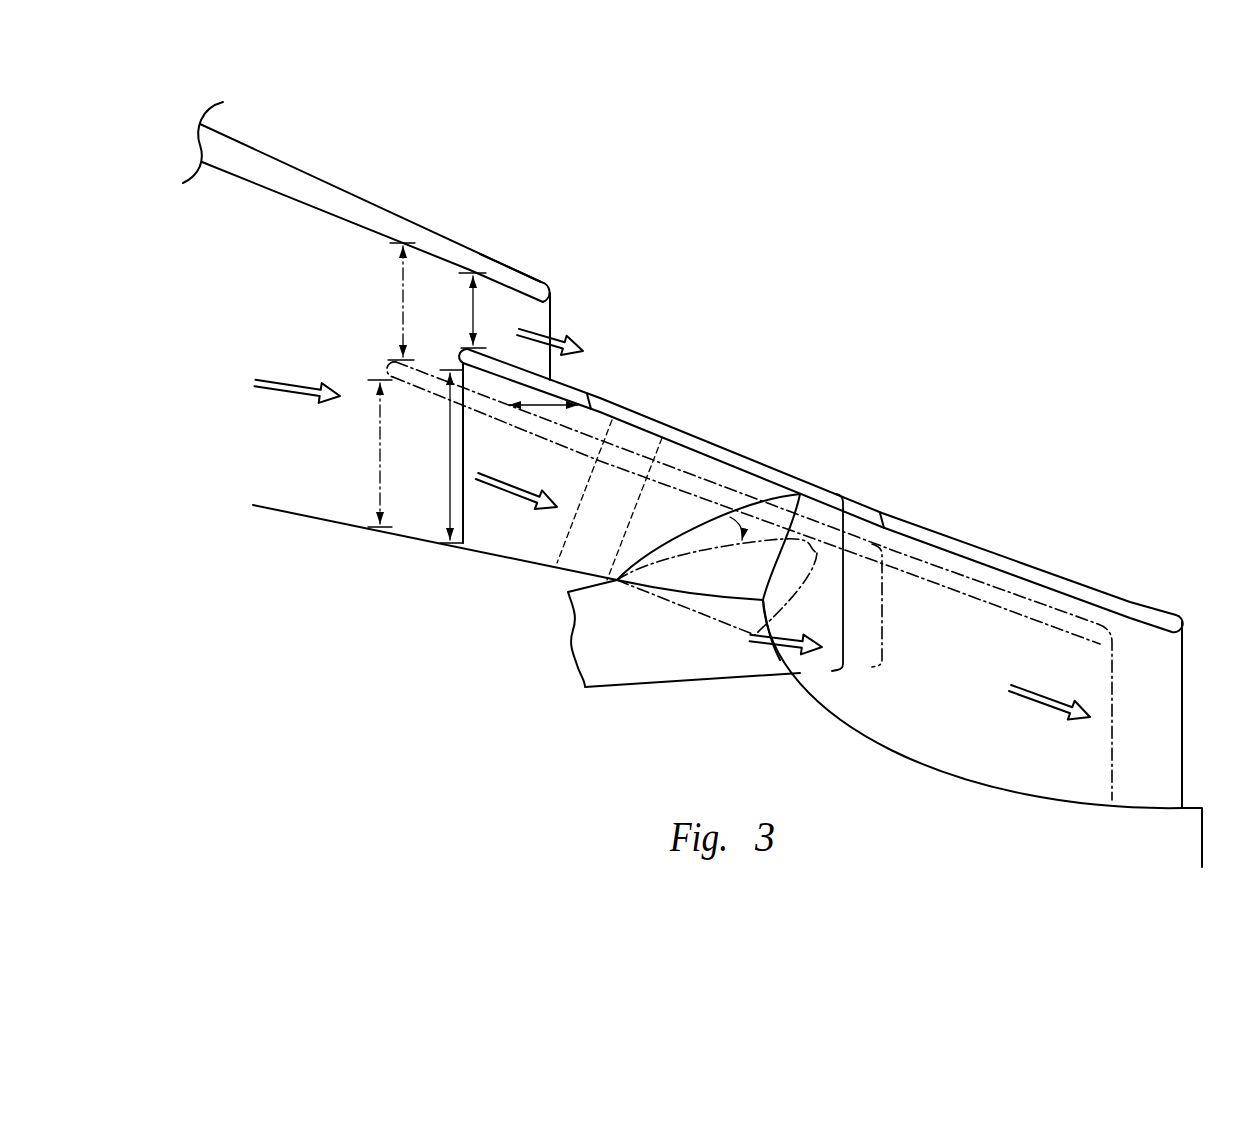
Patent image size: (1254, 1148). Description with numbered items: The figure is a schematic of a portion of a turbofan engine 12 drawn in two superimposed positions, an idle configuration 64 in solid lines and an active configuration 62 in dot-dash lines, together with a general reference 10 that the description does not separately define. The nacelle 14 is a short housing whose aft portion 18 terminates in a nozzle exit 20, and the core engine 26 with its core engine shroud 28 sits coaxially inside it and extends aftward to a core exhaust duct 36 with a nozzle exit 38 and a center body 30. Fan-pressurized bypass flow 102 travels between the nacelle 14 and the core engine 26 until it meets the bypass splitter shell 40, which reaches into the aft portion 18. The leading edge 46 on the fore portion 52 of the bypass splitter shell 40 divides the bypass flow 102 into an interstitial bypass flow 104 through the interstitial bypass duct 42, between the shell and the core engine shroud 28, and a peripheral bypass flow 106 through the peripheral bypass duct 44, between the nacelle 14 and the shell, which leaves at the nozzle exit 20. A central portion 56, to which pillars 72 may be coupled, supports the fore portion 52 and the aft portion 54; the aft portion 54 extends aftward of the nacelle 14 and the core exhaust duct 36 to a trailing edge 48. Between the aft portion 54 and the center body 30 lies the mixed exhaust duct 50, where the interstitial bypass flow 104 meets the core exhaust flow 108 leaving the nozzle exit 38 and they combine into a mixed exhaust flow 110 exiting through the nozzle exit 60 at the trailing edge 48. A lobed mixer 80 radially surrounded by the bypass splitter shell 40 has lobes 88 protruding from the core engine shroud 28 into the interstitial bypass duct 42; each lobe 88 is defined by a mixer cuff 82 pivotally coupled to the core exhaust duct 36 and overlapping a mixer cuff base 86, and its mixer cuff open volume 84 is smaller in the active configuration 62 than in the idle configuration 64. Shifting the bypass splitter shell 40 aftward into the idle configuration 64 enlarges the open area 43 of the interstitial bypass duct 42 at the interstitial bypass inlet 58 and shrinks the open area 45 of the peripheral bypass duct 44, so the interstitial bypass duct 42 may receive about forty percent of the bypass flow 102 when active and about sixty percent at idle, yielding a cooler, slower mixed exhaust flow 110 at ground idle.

The aircraft 10 is at (915, 182).
The turbofan engine 12 is at (900, 228).
The nacelle 14 is at (385, 180).
The aft portion of nacelle 18 is at (498, 258).
The nozzle exit 20 is at (553, 310).
The core engine 26 is at (354, 598).
The core engine shroud 28 is at (308, 510).
The center body 30 is at (1001, 830).
The core exhaust duct 36 is at (678, 677).
The nozzle exit of core exhaust duct 38 is at (815, 615).
The bypass splitter shell 40 is at (856, 473).
The interstitial bypass duct 42 is at (543, 545).
The open area of interstitial bypass duct 43 is at (378, 447).
The peripheral bypass duct 44 is at (505, 312).
The open area of peripheral bypass duct 45 is at (473, 310).
The leading edge 46 is at (463, 351).
The trailing edge 48 is at (1184, 622).
The mixed exhaust duct 50 is at (993, 637).
The fore portion of bypass splitter shell 52 is at (568, 390).
The aft portion of bypass splitter shell 54 is at (1123, 593).
The central portion 56 is at (730, 450).
The interstitial bypass inlet 58 is at (463, 455).
The nozzle exit of mixed exhaust duct 60 is at (1183, 680).
The active configuration 62 is at (1038, 468).
The idle configuration 64 is at (1035, 392).
The pillar 72 is at (608, 531).
The lobed mixer 80 is at (665, 531).
The mixer cuff 82 is at (673, 555).
The mixer cuff open volume 84 is at (848, 584).
The mixer cuff base 86 is at (770, 630).
The lobe 88 is at (705, 522).
The bypass flow 102 is at (291, 386).
The interstitial bypass flow 104 is at (494, 500).
The peripheral bypass flow 106 is at (555, 347).
The core exhaust flow 108 is at (757, 635).
The mixed exhaust flow 110 is at (1030, 700).